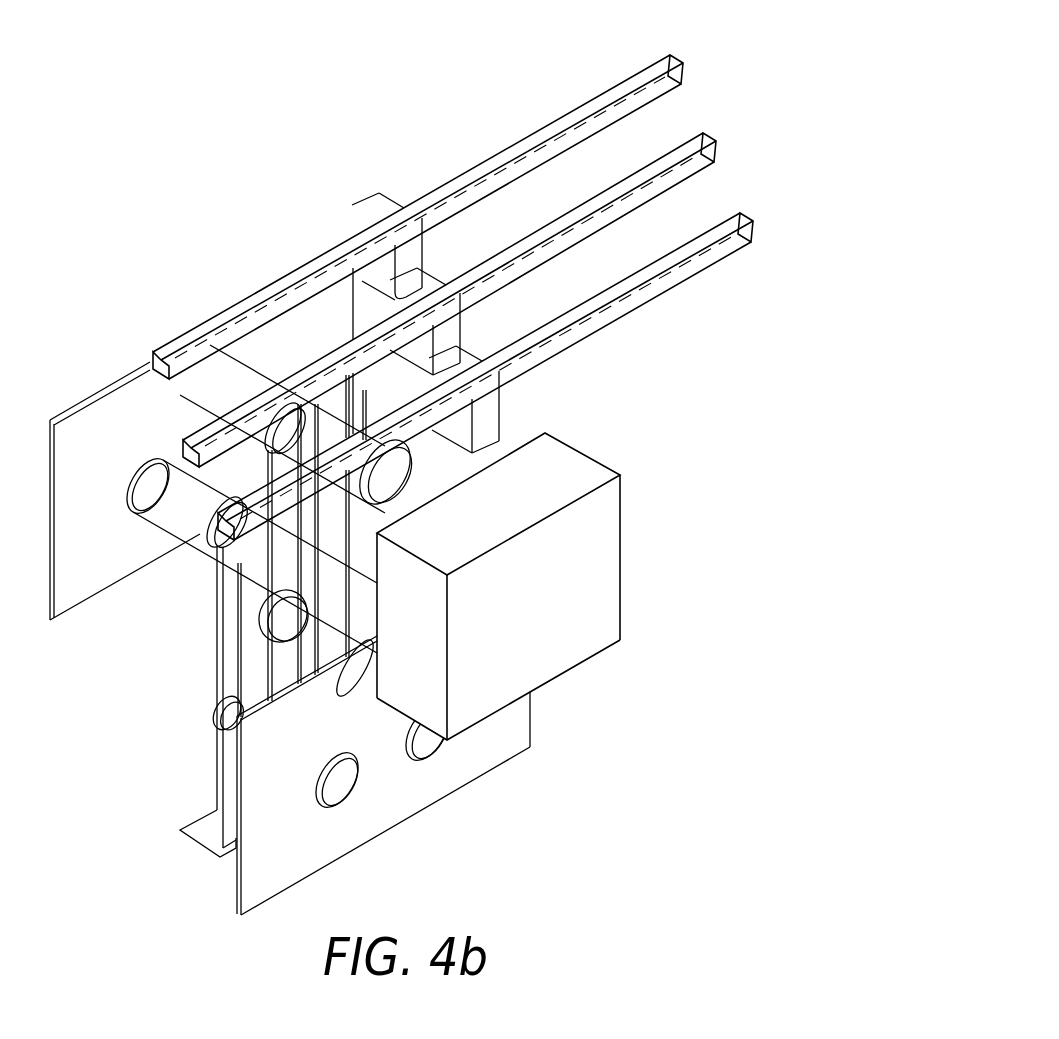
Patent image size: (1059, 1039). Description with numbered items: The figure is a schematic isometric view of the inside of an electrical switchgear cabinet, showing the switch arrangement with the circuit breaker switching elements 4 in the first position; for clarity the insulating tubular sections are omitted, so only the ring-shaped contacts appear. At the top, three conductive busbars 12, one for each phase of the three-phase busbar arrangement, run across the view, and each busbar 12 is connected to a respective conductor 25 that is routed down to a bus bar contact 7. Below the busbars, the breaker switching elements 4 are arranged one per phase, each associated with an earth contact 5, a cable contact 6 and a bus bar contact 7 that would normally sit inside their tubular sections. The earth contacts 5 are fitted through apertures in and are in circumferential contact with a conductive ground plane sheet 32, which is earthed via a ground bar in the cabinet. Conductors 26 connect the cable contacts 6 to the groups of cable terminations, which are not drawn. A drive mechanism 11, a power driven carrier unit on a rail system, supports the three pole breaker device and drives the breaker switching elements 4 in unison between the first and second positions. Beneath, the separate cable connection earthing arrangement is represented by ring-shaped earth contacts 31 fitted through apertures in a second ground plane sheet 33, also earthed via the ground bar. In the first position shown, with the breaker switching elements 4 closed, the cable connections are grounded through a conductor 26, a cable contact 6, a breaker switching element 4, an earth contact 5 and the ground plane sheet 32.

The circuit breaker switching element 4 is at (170, 519).
The earth contact 5 is at (140, 477).
The cable contact 6 is at (265, 449).
The bus bar contact 7 is at (378, 484).
The drive mechanism 11 is at (543, 665).
The busbar 12 is at (677, 58).
The conductor 25 is at (428, 262).
The conductor 26 is at (217, 665).
The earth contact 31 is at (432, 749).
The ground plane sheet 32 is at (94, 400).
The ground plane sheet 33 is at (338, 843).